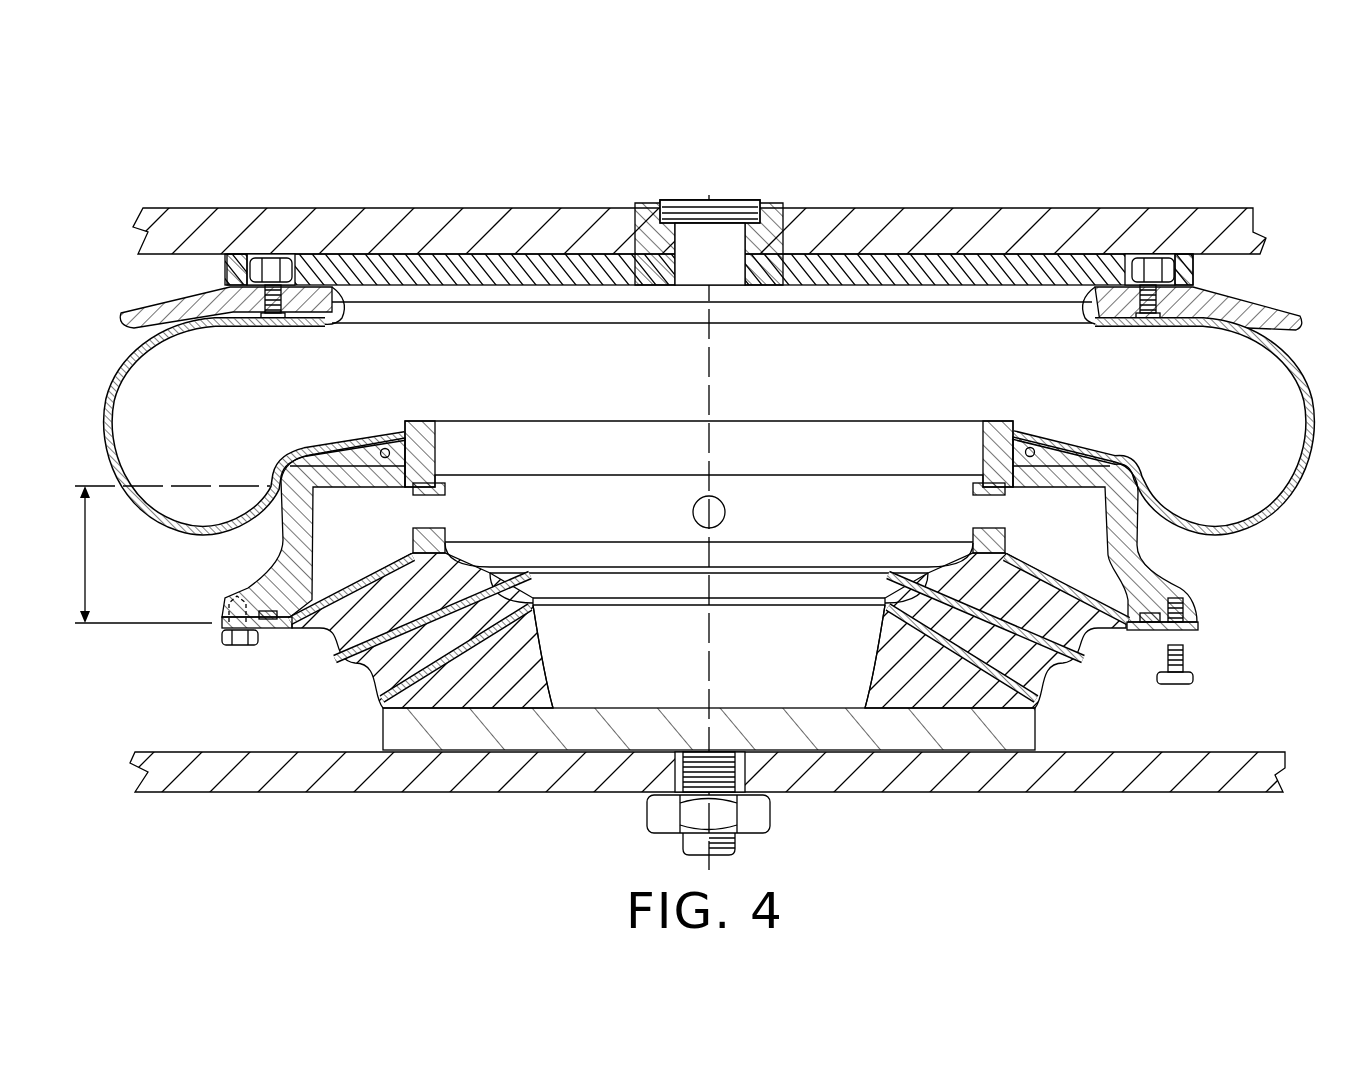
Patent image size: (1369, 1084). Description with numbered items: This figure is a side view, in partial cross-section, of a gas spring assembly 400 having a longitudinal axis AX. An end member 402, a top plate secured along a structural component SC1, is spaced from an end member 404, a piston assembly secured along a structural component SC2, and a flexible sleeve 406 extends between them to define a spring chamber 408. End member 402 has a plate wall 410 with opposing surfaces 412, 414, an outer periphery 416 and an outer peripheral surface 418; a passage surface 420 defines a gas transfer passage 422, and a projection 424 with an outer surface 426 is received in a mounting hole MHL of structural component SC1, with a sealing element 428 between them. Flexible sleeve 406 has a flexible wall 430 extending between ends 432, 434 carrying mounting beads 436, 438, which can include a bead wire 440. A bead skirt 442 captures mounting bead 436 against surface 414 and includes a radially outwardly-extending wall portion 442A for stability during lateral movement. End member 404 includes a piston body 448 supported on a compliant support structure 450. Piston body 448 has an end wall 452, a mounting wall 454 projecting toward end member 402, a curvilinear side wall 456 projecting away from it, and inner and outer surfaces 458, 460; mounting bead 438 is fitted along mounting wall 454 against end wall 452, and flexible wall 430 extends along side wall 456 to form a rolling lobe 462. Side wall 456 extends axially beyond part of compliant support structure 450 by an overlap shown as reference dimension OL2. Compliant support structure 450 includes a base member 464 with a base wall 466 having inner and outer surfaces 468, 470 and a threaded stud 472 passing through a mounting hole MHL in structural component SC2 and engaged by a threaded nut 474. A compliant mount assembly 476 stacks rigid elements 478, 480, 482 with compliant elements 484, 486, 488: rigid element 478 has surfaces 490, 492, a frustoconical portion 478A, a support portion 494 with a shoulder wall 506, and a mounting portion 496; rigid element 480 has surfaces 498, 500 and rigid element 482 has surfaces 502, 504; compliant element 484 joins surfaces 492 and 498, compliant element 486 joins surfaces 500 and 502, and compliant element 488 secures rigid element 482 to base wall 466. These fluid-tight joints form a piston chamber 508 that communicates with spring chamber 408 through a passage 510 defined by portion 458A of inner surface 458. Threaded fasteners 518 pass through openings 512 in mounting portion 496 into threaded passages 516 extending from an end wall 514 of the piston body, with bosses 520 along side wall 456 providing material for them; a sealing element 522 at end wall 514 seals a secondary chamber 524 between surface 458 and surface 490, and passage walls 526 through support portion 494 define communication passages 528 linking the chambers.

The gas spring assembly 400 is at (1268, 266).
The end member 402 is at (912, 256).
The end member 404 is at (1250, 598).
The flexible sleeve 406 is at (1294, 350).
The spring chamber 408 is at (178, 387).
The plate wall 410 is at (468, 268).
The surface 412 is at (400, 272).
The surface 414 is at (525, 270).
The outer periphery 416 is at (1185, 256).
The outer peripheral surface 418 is at (225, 268).
The passage surface 420 is at (737, 225).
The gas transfer passage 422 is at (718, 250).
The projection 424 is at (655, 250).
The outer surface 426 is at (800, 285).
The sealing element 428 is at (648, 205).
The flexible wall 430 is at (108, 422).
The end 432 is at (338, 326).
The end 434 is at (398, 402).
The mounting bead 436 is at (272, 260).
The mounting bead 438 is at (355, 440).
The bead wire 440 is at (288, 318).
The bead skirt 442 is at (1182, 308).
The radially outwardly-extending wall portion 442A is at (168, 312).
The piston body 448 is at (278, 520).
The compliant support structure 450 is at (350, 686).
The end wall 452 is at (1058, 470).
The mounting wall 454 is at (992, 422).
The side wall 456 is at (1122, 565).
The inner surface 458 is at (1125, 466).
The portion of inner surface 458A is at (412, 476).
The outer surface 460 is at (1165, 520).
The rolling lobe 462 is at (1202, 524).
The base member 464 is at (590, 730).
The base wall 466 is at (1003, 740).
The inner surface 468 is at (772, 705).
The outer surface 470 is at (860, 765).
The threaded stud 472 is at (686, 847).
The threaded nut 474 is at (652, 812).
The compliant mount assembly 476 is at (1085, 640).
The rigid element 478 is at (1140, 598).
The portion 478A is at (1195, 607).
The rigid element 480 is at (890, 640).
The rigid element 482 is at (882, 690).
The compliant element 484 is at (975, 560).
The compliant element 486 is at (950, 622).
The compliant element 488 is at (940, 740).
The surface 490 is at (345, 600).
The surface 492 is at (425, 556).
The support portion 494 is at (980, 532).
The mounting portion 496 is at (1145, 626).
The surface 498 is at (458, 585).
The surface 500 is at (505, 600).
The surface 502 is at (532, 612).
The surface 504 is at (505, 632).
The shoulder wall 506 is at (1002, 496).
The piston chamber 508 is at (535, 752).
The passage 510 is at (869, 452).
The openings 512 is at (1185, 632).
The end wall 514 is at (1185, 612).
The threaded passages 516 is at (1197, 624).
The threaded fasteners 518 is at (236, 648).
The bosses 520 is at (228, 610).
The sealing element 522 is at (266, 630).
The secondary chamber 524 is at (448, 488).
The passage walls 526 is at (726, 504).
The communication passages 528 is at (696, 498).
The structural component SC1 is at (208, 228).
The structural component SC2 is at (265, 778).
The mounting hole MHL is at (635, 270).
The longitudinal axis AX is at (728, 380).
The reference dimension OL2 is at (167, 554).